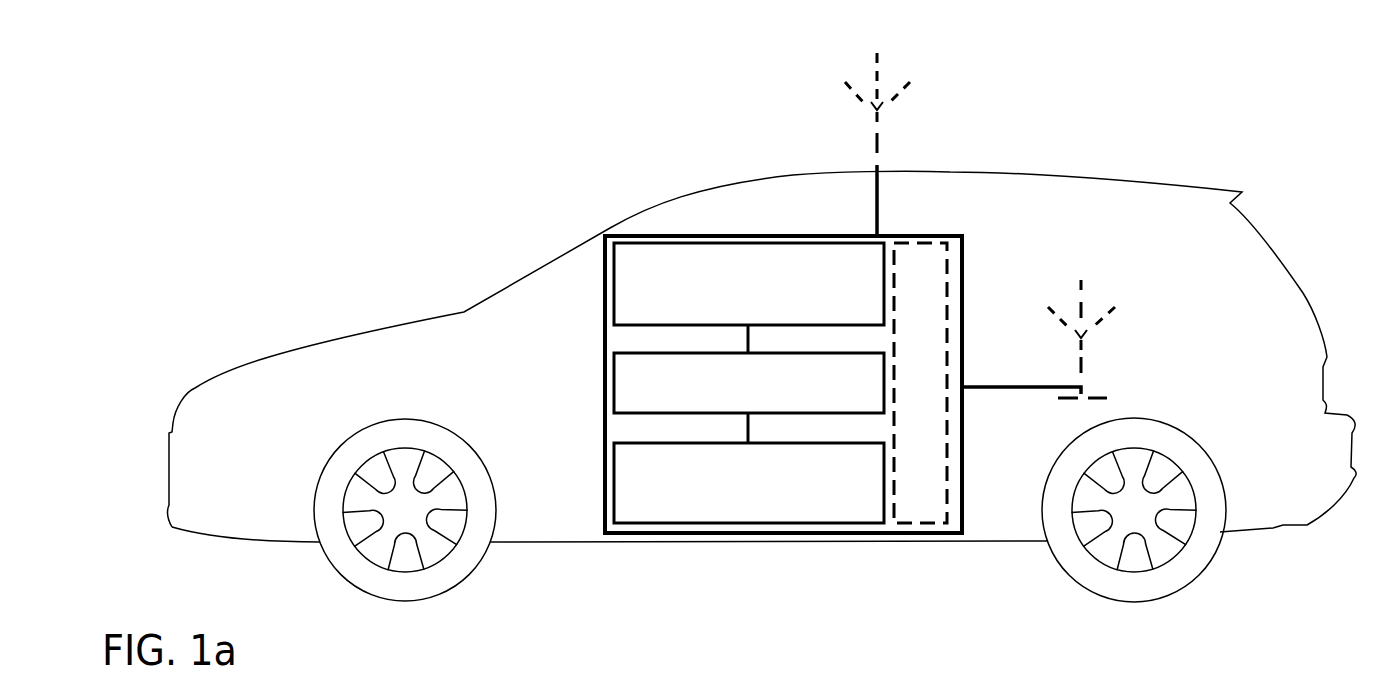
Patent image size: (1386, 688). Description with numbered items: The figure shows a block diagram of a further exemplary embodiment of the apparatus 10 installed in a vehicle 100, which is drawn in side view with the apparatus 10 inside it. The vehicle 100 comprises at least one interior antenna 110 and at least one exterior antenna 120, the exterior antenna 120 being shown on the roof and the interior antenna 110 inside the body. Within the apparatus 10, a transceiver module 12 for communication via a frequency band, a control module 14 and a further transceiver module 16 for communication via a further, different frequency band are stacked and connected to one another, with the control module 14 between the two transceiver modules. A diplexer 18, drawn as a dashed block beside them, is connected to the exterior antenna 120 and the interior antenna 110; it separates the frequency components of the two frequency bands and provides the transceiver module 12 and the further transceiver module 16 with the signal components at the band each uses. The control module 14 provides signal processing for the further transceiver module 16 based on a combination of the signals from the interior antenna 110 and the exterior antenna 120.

The apparatus 10 is at (770, 533).
The transceiver module 12 is at (707, 245).
The control module 14 is at (614, 378).
The further transceiver module 16 is at (705, 523).
The diplexer 18 is at (933, 523).
The vehicle 100 is at (1293, 525).
The interior antenna 110 is at (1081, 365).
The exterior antenna 120 is at (877, 130).